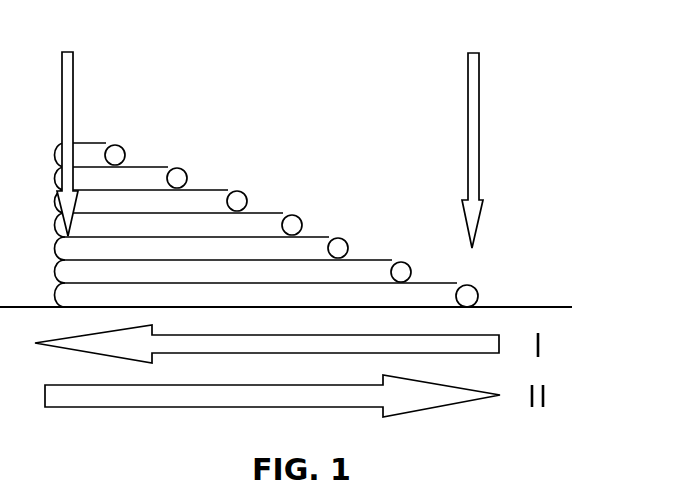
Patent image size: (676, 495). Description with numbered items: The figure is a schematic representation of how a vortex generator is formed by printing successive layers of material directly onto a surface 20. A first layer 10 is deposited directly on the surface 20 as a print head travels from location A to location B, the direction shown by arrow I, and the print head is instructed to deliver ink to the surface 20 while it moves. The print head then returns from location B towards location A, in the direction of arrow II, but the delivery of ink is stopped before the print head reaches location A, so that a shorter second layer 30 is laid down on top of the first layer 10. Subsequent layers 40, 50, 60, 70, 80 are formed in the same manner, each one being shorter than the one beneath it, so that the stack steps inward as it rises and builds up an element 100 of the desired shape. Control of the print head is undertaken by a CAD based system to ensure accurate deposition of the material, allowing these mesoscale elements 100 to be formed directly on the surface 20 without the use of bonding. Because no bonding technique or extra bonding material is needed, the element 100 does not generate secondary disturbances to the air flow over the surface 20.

The element 100 is at (291, 216).
The first layer 10 is at (427, 289).
The surface 20 is at (532, 307).
The second layer 30 is at (370, 270).
The subsequent layer 40 is at (308, 245).
The subsequent layer 50 is at (262, 222).
The subsequent layer 60 is at (204, 198).
The subsequent layer 70 is at (147, 176).
The subsequent layer 80 is at (83, 152).